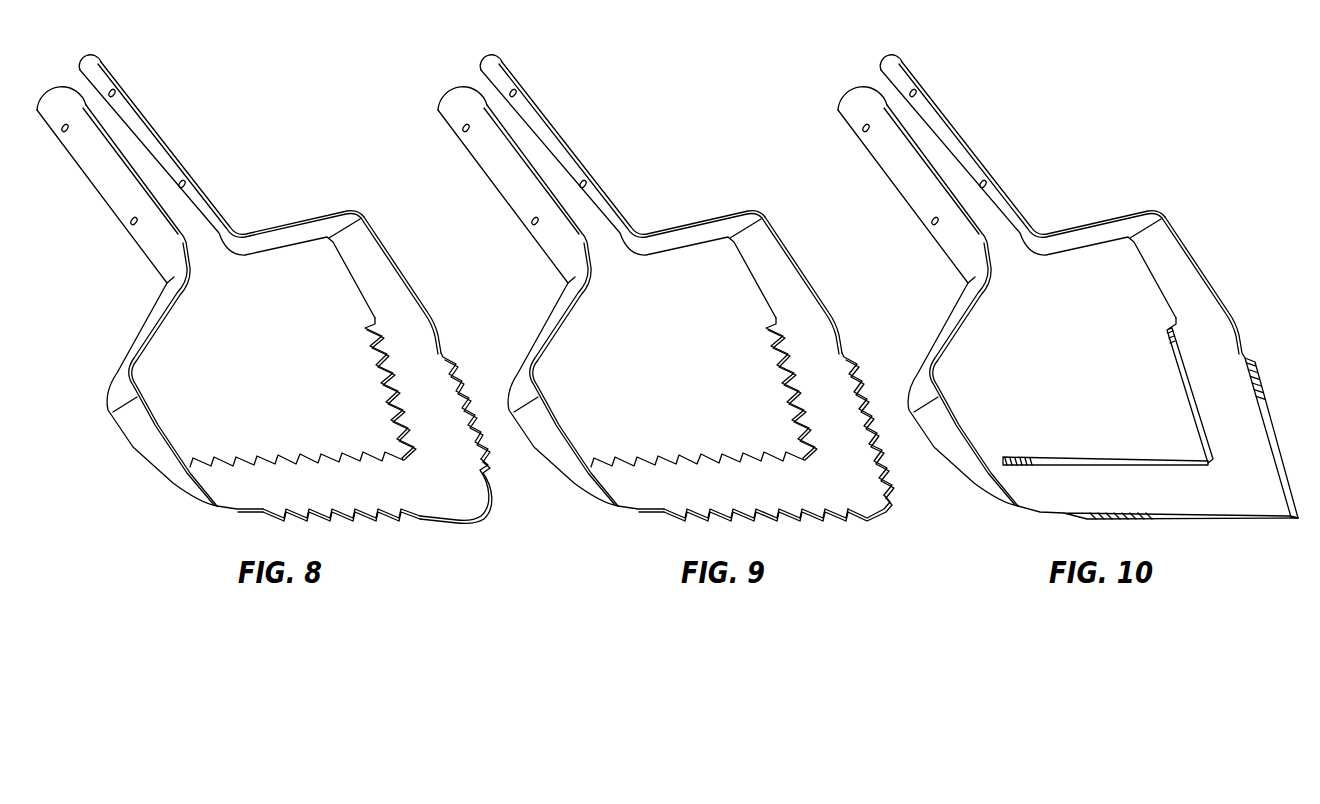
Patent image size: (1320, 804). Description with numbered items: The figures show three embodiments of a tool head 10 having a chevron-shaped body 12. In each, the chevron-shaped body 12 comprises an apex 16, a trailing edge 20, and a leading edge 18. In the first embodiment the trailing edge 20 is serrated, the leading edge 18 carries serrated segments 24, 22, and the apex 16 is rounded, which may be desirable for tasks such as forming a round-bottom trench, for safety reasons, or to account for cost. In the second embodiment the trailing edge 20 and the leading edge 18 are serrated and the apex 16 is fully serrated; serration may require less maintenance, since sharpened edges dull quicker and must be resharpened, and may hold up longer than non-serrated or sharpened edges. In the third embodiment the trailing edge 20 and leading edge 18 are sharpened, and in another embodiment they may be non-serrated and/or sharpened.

In FIG. 8, the tool head 10 is at (295, 327).
In FIG. 9, the tool head 10 is at (696, 327).
In FIG. 10, the tool head 10 is at (1076, 330).
In FIG. 8, the chevron-shaped body 12 is at (406, 536).
In FIG. 9, the chevron-shaped body 12 is at (756, 554).
In FIG. 10, the chevron-shaped body 12 is at (1181, 556).
In FIG. 8, the apex 16 is at (494, 528).
In FIG. 9, the apex 16 is at (891, 541).
In FIG. 10, the apex 16 is at (1281, 560).
In FIG. 8, the leading edge 18 is at (499, 471).
In FIG. 9, the leading edge 18 is at (858, 367).
In FIG. 10, the leading edge 18 is at (1238, 367).
In FIG. 8, the serrated trailing edge 20 is at (365, 378).
In FIG. 9, the serrated trailing edge 20 is at (704, 392).
In FIG. 10, the serrated trailing edge 20 is at (1108, 391).
In FIG. 8, the serrated segment of leading edge 22 is at (257, 527).
In FIG. 9, the serrated segment of leading edge 22 is at (628, 527).
In FIG. 10, the serrated segment of leading edge 22 is at (1028, 527).
In FIG. 8, the serrated segment of leading edge 24 is at (468, 356).
In FIG. 9, the serrated segment of leading edge 24 is at (868, 397).
In FIG. 10, the serrated segment of leading edge 24 is at (1264, 347).